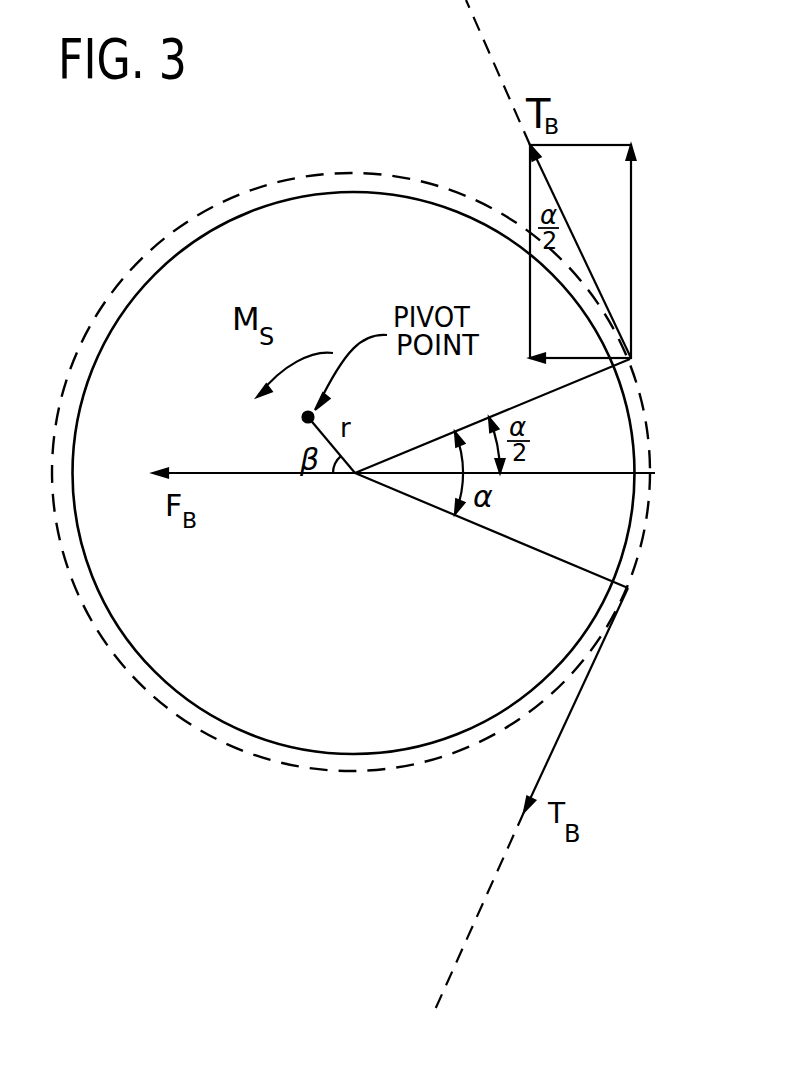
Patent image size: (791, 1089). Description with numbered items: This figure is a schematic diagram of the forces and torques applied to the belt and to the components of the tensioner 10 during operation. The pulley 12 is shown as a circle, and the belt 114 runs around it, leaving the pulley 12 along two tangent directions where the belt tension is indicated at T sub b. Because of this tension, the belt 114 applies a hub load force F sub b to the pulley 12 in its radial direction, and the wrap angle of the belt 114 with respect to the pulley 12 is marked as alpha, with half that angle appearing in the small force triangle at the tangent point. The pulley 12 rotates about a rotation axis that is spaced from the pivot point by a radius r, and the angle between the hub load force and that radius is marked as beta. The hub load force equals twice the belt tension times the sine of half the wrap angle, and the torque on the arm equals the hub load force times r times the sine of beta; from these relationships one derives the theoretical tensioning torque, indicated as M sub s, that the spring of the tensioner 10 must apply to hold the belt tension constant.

The tensioner 10 is at (90, 275).
The pulley 12 is at (205, 714).
The belt 114 is at (485, 905).